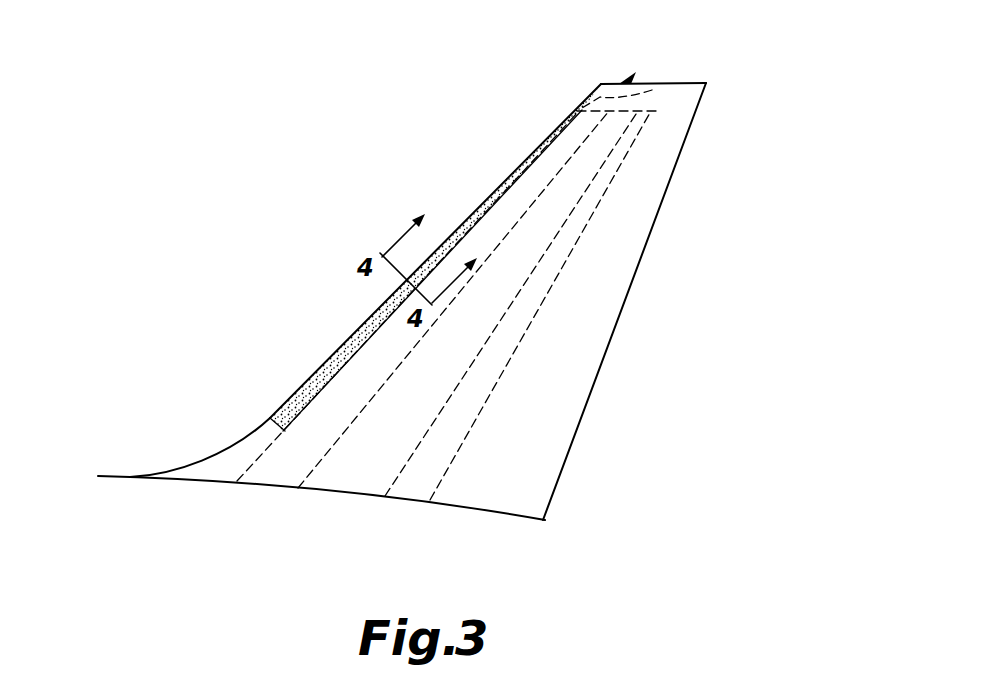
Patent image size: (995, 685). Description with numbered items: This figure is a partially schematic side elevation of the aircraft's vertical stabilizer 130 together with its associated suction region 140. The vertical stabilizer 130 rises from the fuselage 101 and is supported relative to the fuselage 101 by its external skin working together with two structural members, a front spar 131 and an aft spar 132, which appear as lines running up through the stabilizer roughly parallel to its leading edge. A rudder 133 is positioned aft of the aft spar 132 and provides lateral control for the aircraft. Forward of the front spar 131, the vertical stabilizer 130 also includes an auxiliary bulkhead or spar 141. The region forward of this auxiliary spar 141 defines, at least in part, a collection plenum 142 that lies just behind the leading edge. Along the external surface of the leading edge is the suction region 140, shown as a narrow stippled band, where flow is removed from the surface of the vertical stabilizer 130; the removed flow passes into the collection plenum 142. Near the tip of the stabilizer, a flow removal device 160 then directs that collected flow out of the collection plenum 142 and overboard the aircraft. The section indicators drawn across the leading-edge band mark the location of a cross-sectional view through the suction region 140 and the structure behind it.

The fuselage 101 is at (200, 477).
The vertical stabilizer 130 is at (280, 330).
The structural front spar 131 is at (320, 462).
The aft spar 132 is at (402, 470).
The rudder 133 is at (573, 365).
The suction region 140 is at (360, 325).
The auxiliary bulkhead or spar 141 is at (262, 450).
The collection plenum 142 is at (496, 190).
The flow removal device 160 is at (580, 109).